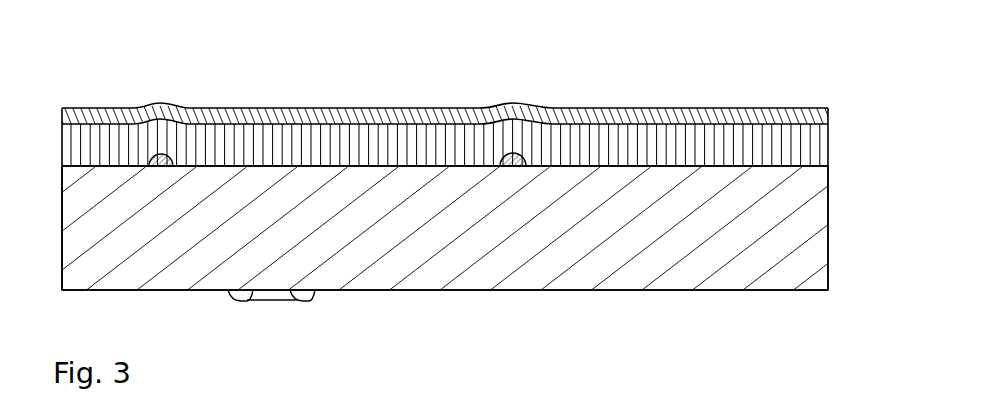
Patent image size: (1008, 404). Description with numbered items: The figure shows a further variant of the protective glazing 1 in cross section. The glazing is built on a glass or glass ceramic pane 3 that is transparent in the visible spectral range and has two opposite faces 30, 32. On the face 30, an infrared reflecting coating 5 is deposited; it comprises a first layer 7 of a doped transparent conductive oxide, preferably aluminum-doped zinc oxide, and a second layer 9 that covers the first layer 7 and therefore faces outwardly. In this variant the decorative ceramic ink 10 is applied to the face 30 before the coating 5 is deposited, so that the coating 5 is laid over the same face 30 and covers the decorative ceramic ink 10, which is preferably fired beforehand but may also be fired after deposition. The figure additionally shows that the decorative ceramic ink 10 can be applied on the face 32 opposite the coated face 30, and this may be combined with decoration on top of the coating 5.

The protective glazing 1 is at (71, 56).
The glass or glass ceramic pane 3 is at (828, 223).
The infrared reflecting coating 5 is at (58, 110).
The first layer 7 is at (828, 150).
The second layer 9 is at (828, 116).
The decorative ceramic ink 10 is at (513, 156).
The face 30 is at (423, 168).
The face 32 is at (353, 292).